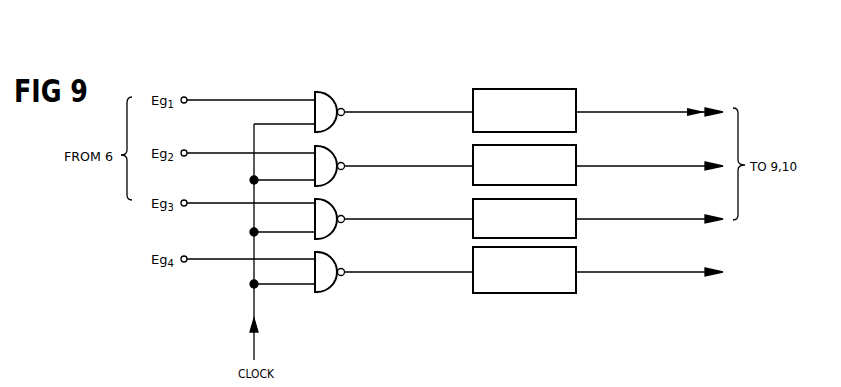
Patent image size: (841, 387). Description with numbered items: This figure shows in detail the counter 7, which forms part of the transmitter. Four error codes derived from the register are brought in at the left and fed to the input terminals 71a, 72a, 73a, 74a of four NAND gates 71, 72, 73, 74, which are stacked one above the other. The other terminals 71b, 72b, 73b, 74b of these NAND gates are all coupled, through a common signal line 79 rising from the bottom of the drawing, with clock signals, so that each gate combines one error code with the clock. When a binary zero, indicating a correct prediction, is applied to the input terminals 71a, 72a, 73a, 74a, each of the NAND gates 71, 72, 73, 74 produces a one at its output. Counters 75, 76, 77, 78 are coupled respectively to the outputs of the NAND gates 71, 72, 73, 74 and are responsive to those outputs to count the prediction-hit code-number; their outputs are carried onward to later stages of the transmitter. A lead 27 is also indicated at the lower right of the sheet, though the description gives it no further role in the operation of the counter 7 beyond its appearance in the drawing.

The counter 7 is at (613, 63).
The lead 27 is at (605, 386).
The NAND gate 71 is at (319, 91).
The NAND gate 72 is at (338, 147).
The NAND gate 73 is at (337, 205).
The NAND gate 74 is at (339, 258).
The input terminal 71a is at (250, 97).
The input terminal 72a is at (229, 152).
The input terminal 73a is at (235, 202).
The input terminal 74a is at (239, 258).
The other terminal 71b is at (292, 125).
The other terminal 72b is at (296, 183).
The other terminal 73b is at (295, 233).
The other terminal 74b is at (292, 285).
The counter 75 is at (564, 97).
The counter 76 is at (578, 153).
The counter 77 is at (575, 213).
The counter 78 is at (572, 265).
The signal line 79 is at (257, 318).